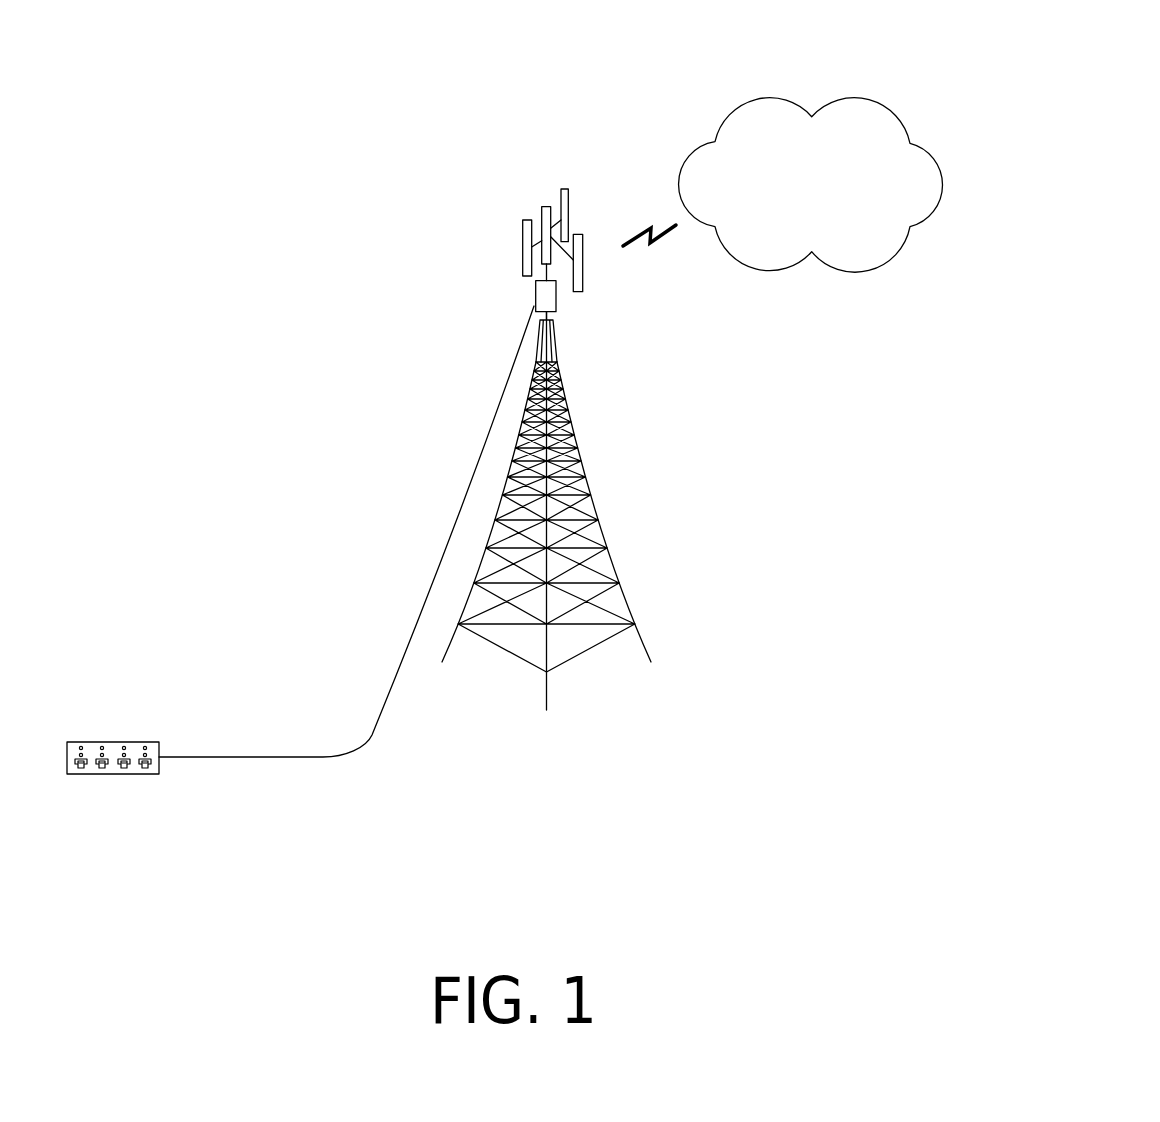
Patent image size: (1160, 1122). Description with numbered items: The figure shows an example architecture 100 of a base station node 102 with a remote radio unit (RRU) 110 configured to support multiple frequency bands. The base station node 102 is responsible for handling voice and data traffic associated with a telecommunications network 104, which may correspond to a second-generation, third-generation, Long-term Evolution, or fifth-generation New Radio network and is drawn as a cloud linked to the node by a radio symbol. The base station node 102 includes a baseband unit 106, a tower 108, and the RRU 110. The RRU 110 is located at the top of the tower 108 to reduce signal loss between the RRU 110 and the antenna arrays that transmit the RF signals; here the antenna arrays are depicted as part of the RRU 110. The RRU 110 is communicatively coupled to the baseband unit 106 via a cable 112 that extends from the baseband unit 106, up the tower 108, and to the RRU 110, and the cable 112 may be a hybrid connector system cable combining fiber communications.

The communication system 100 is at (901, 58).
The base station node 102 is at (606, 513).
The telecommunications network 104 is at (830, 220).
The baseband unit 106 is at (112, 775).
The tower 108 is at (578, 657).
The remote radio unit (RRU) 110 is at (523, 241).
The cable 112 is at (452, 528).